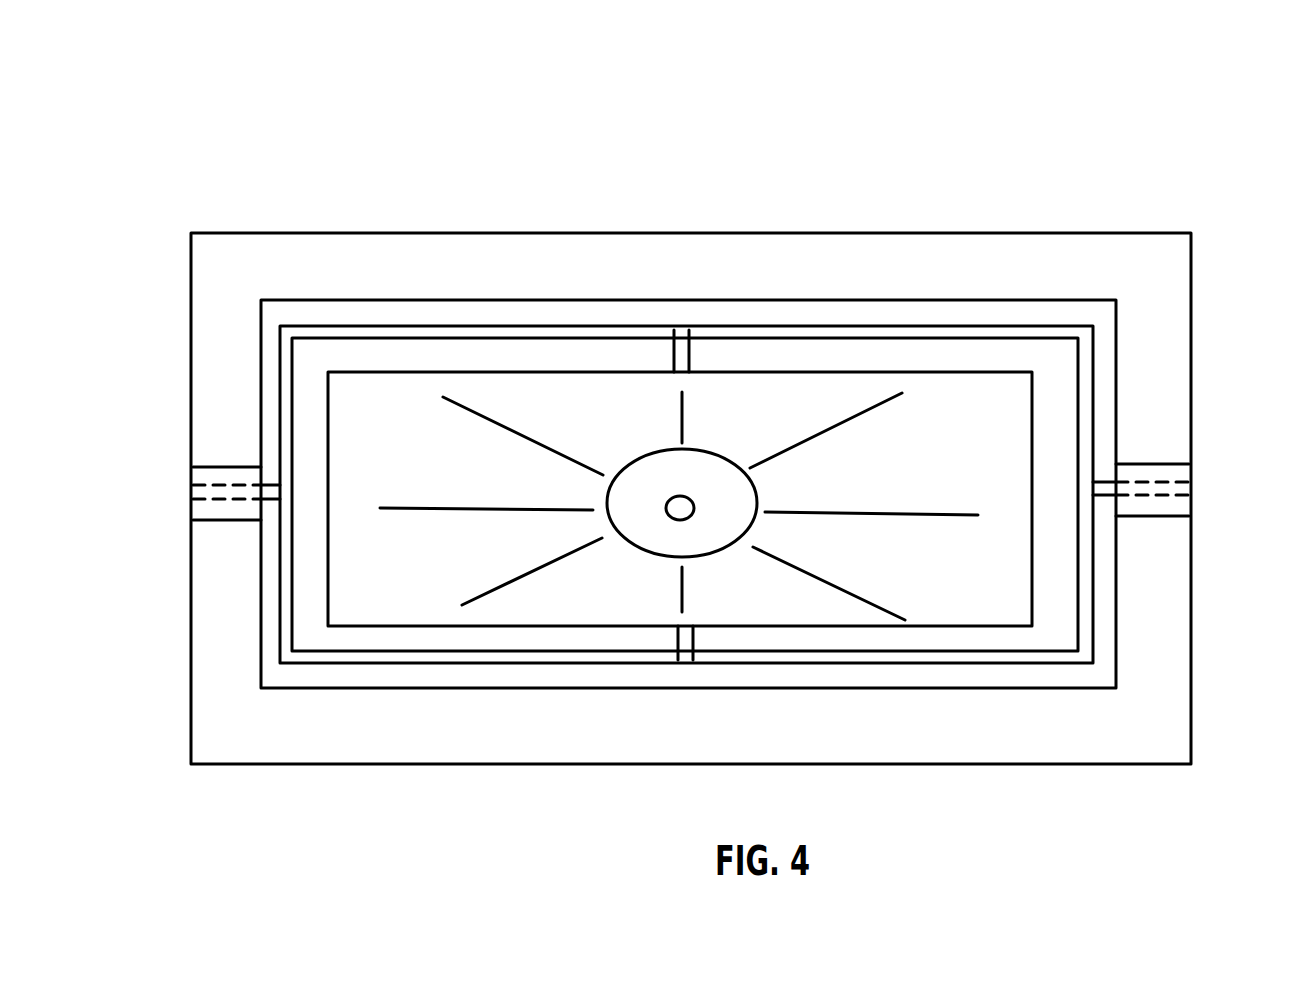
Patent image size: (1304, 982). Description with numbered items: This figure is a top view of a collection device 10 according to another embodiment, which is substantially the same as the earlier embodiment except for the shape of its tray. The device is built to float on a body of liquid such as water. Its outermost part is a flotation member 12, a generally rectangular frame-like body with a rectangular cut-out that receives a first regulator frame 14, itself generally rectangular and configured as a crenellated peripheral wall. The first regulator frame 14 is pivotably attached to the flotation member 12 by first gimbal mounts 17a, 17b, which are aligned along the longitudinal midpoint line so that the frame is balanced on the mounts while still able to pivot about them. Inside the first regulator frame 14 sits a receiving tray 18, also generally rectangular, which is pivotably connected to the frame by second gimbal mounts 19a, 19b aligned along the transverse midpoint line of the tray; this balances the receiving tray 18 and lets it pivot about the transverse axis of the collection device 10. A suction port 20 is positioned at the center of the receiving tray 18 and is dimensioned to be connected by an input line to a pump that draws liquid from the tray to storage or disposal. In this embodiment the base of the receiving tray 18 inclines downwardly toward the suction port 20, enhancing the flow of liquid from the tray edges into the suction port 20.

The collection device 10 is at (777, 170).
The flotation member 12 is at (1058, 253).
The first regulator frame 14 is at (1055, 655).
The first gimbal mount 17a is at (273, 492).
The first gimbal mount 17b is at (1103, 490).
The receiving tray 18 is at (930, 436).
The second gimbal mount 19a is at (682, 355).
The second gimbal mount 19b is at (673, 642).
The suction port 20 is at (690, 480).